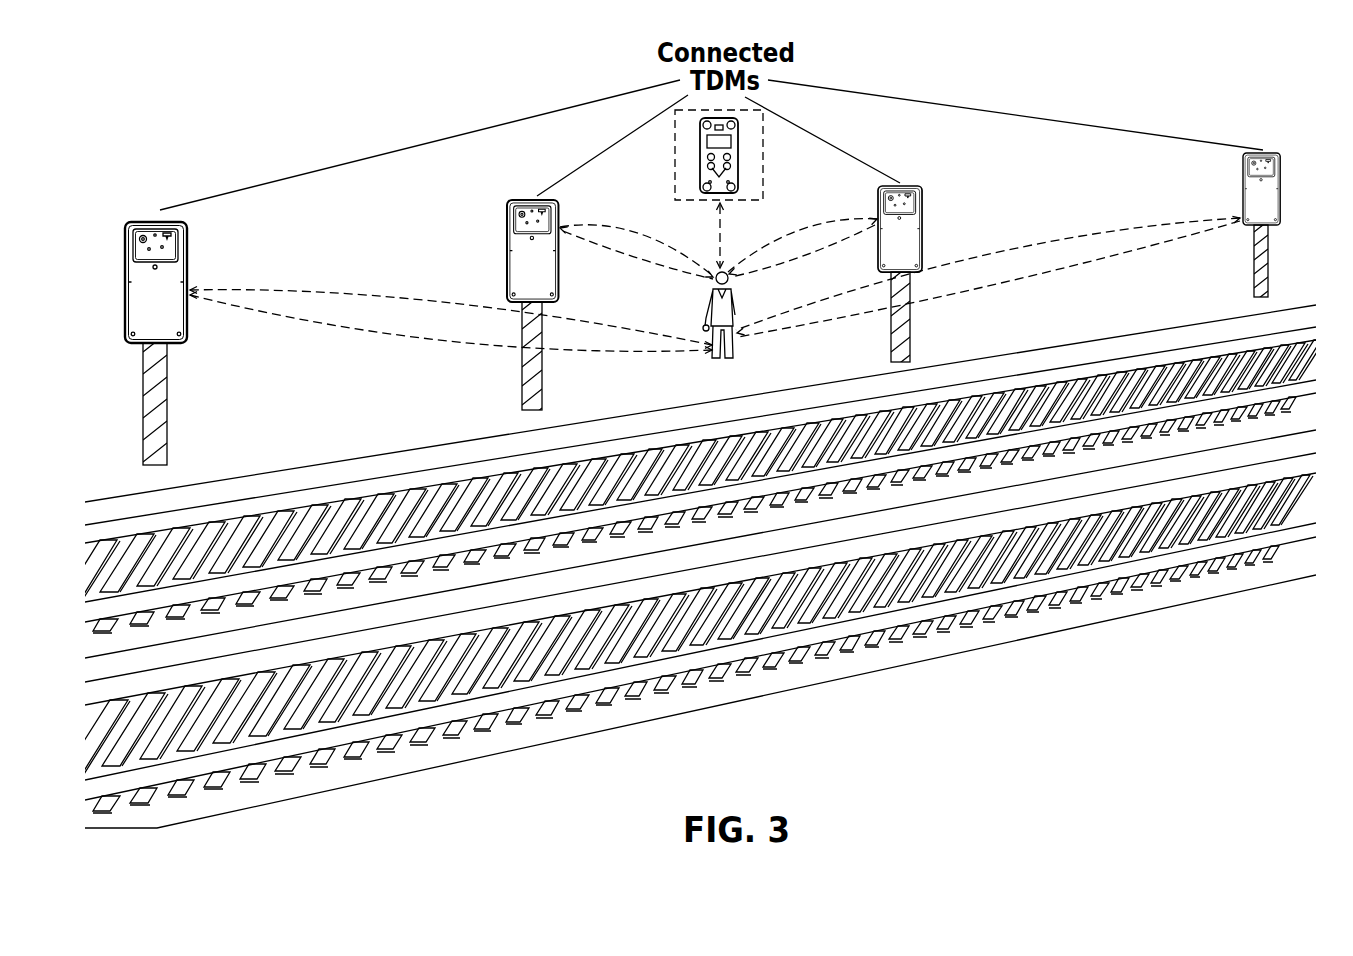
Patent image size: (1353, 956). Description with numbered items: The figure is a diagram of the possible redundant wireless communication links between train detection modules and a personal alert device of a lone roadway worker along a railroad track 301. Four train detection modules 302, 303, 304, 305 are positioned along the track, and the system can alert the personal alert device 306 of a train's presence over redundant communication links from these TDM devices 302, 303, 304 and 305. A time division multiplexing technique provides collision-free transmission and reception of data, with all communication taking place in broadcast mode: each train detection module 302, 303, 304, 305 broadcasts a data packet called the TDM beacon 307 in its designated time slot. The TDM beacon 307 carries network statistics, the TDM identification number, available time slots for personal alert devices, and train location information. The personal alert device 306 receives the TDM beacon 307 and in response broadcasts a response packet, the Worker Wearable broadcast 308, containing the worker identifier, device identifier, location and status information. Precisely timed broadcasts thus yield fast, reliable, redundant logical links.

The railroad track 301 is at (385, 455).
The train detection module 302 is at (188, 243).
The train detection module 303 is at (559, 210).
The train detection module 304 is at (923, 191).
The train detection module 305 is at (1282, 172).
The personal alert device 306 is at (764, 158).
The TDM beacon 307 is at (280, 290).
The Worker Wearable broadcast 308 is at (337, 325).